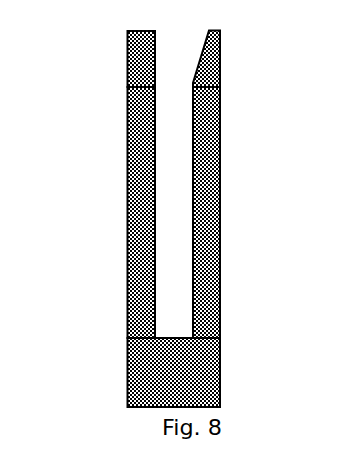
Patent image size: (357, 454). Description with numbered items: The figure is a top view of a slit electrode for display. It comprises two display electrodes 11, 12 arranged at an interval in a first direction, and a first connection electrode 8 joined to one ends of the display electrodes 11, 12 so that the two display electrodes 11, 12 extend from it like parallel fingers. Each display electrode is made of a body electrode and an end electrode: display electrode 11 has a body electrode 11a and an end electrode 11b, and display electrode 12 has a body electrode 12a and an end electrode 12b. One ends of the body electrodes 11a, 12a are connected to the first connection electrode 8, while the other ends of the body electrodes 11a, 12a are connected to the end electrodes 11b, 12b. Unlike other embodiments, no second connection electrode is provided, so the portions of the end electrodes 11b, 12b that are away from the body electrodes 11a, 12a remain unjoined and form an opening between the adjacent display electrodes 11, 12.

The first connection electrode 8 is at (221, 375).
The display electrode 11 is at (90, 184).
The body electrode 11a is at (134, 121).
The end electrode 11b is at (133, 63).
The display electrode 12 is at (256, 185).
The body electrode 12a is at (214, 123).
The end electrode 12b is at (212, 67).